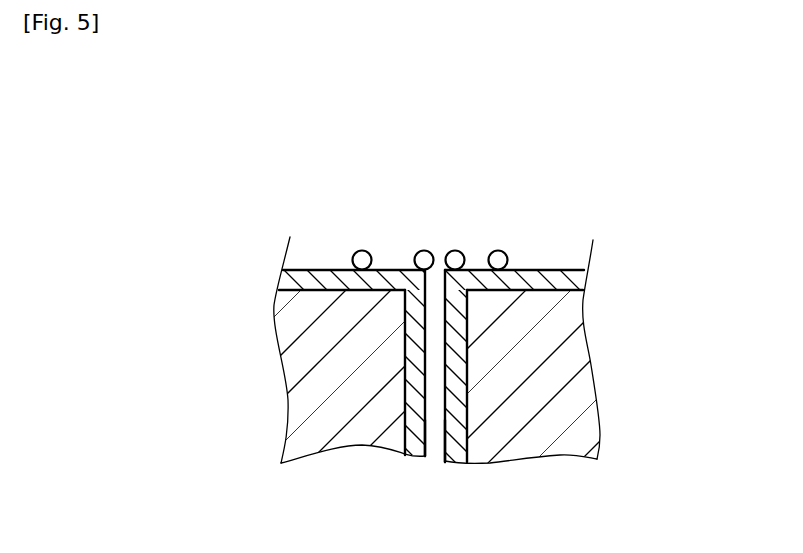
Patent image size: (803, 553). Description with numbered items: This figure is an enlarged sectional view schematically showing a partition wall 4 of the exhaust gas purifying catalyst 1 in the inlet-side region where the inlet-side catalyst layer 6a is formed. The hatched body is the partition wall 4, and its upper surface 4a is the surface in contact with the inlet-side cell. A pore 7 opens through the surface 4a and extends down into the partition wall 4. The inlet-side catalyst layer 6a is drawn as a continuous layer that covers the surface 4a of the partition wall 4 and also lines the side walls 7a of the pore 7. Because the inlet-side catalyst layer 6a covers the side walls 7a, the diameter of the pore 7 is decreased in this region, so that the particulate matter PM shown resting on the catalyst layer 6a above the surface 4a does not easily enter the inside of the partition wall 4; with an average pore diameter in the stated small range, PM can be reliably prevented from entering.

The semiconductor device 1 is at (215, 197).
The partition wall 4 is at (567, 368).
The surface of the partition wall 4a is at (310, 290).
The inlet-side catalyst layer 6a is at (548, 275).
The pores 7 is at (436, 290).
The side walls of pores 7a is at (465, 412).
The particulate matter PM is at (497, 250).